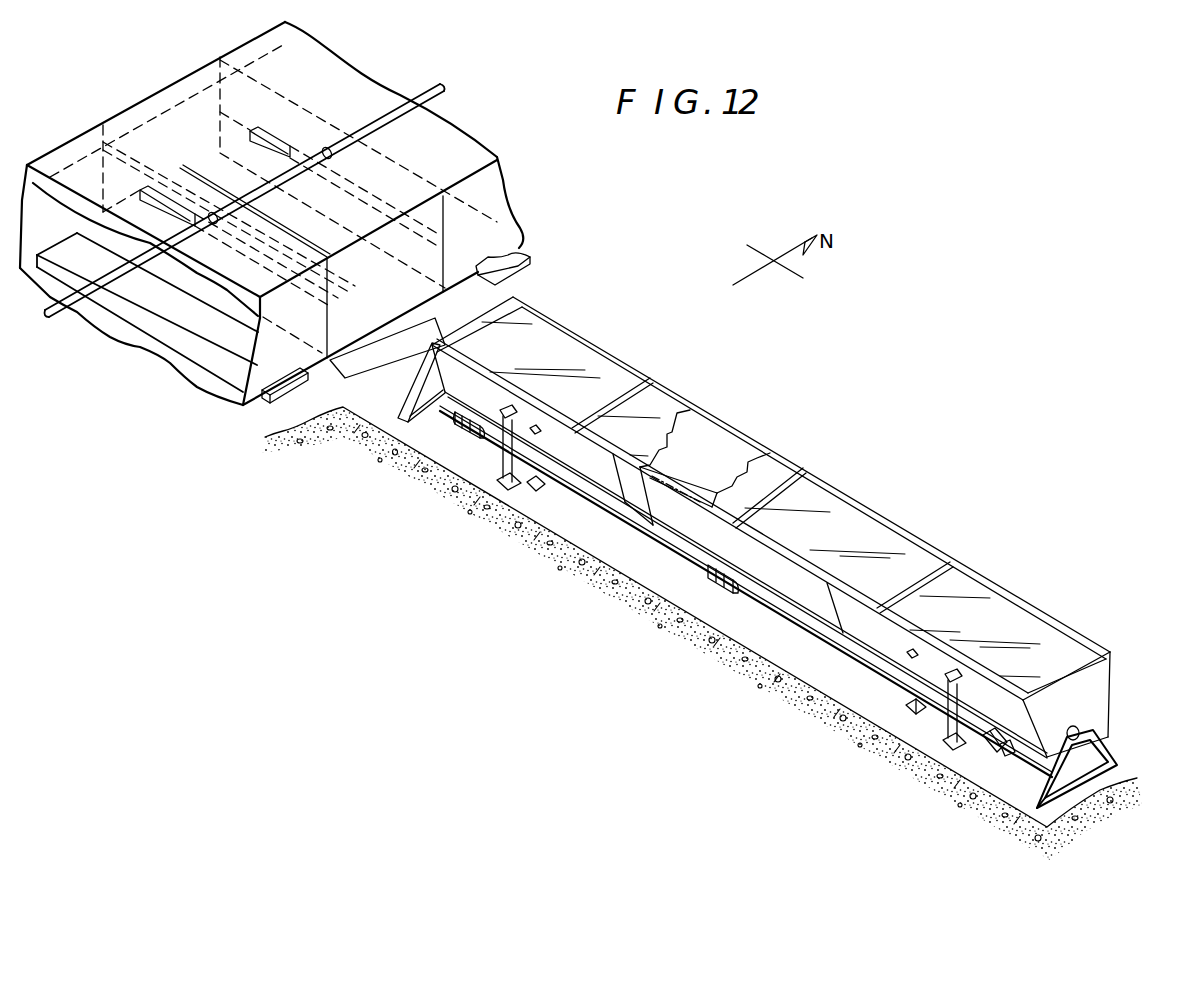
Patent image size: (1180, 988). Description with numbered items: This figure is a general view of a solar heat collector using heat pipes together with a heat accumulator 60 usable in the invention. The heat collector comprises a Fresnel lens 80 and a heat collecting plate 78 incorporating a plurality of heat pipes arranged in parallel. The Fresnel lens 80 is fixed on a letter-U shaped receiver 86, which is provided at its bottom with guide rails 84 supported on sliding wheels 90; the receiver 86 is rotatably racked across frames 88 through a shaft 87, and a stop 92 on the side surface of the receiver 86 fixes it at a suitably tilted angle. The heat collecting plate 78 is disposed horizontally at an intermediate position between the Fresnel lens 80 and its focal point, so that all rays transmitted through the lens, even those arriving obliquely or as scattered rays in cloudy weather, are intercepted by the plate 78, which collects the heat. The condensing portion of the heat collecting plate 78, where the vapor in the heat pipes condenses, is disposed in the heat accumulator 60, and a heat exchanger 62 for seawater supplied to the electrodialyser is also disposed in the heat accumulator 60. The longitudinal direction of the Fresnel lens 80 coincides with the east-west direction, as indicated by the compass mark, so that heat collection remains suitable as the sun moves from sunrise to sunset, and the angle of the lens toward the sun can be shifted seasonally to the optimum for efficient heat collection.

The heat accumulator 60 is at (138, 107).
The heat exchanger 62 is at (107, 275).
The heat collecting plate 78 is at (308, 372).
The Fresnel lens 80 is at (754, 537).
The guide rails 84 is at (992, 735).
The receiver 86 is at (975, 574).
The shaft 87 is at (1076, 727).
The frames 88 is at (1102, 751).
The sliding wheels 90 is at (997, 746).
The stop 92 is at (952, 717).